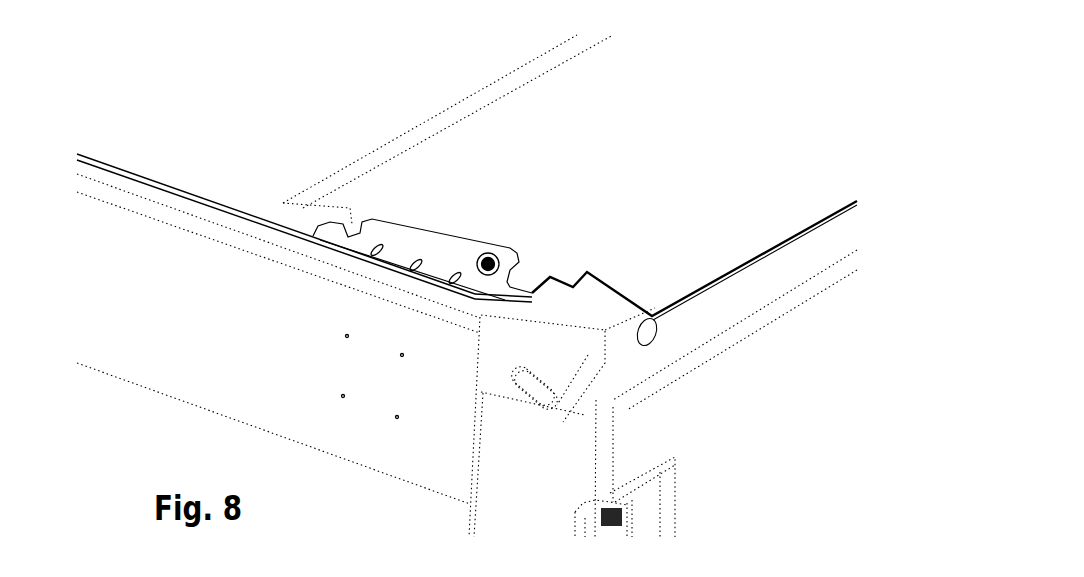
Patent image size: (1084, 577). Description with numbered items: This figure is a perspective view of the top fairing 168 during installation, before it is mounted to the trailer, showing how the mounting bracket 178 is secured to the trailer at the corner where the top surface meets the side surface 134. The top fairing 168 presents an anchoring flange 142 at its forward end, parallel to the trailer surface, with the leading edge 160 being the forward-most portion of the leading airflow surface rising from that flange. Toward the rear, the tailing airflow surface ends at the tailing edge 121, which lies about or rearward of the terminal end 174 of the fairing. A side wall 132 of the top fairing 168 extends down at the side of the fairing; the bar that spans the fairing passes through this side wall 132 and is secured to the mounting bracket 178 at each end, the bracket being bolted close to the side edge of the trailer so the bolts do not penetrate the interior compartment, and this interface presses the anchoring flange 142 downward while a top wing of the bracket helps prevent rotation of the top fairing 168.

The top fairing 168 is at (786, 85).
The leading edge 160 is at (457, 118).
The anchoring flange 142 is at (380, 148).
The mounting bracket 178 is at (440, 255).
The side surface 134 is at (278, 363).
The tailing edge 121 is at (763, 256).
The terminal end 174 is at (792, 454).
The side wall 132 is at (530, 268).